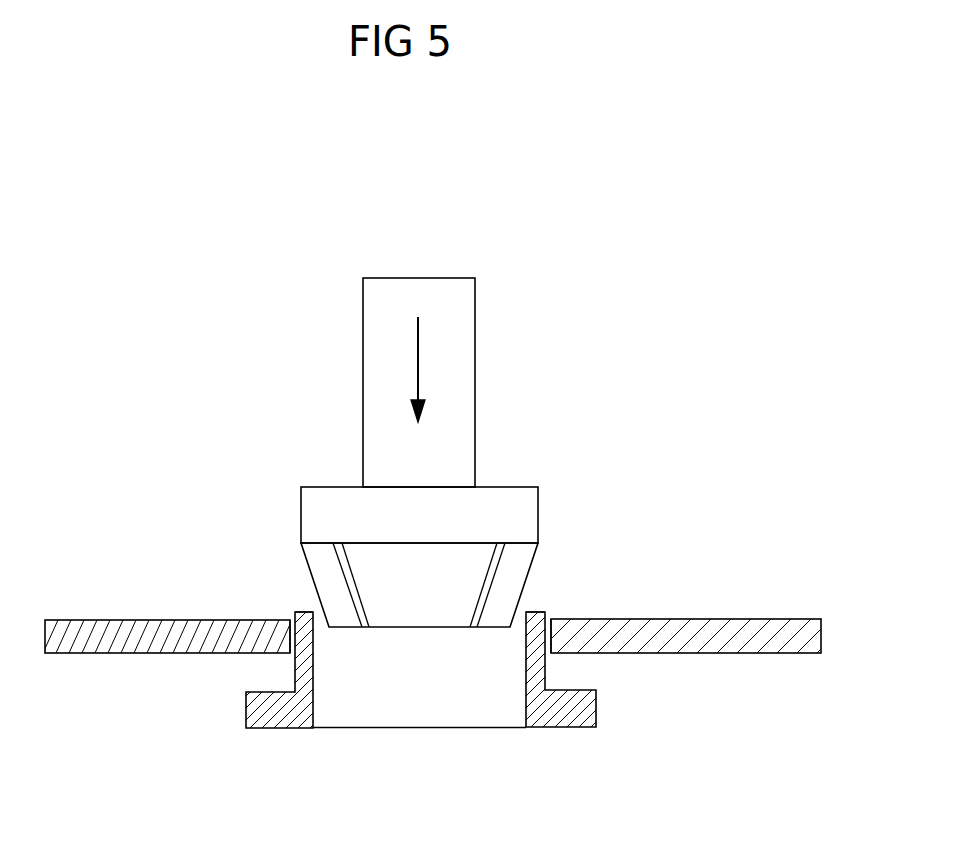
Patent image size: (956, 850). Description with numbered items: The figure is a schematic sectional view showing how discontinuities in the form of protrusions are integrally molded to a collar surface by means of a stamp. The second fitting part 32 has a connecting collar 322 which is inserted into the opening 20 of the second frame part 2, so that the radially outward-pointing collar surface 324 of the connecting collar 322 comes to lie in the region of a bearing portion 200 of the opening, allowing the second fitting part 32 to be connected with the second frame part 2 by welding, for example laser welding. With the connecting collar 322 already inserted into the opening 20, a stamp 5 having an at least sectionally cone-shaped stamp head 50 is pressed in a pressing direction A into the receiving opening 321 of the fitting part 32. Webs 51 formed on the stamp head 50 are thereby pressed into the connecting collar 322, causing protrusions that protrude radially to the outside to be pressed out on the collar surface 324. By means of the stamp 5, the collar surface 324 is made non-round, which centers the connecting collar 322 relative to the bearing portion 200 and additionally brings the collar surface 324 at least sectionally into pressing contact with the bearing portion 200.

The stamp 5 is at (448, 403).
The pressing direction A is at (419, 370).
The stamp head 50 is at (466, 557).
The webs 51 is at (340, 548).
The second frame part 2 is at (684, 653).
The bearing portion 200 is at (548, 615).
The opening 20 is at (294, 618).
The second fitting part 32 is at (418, 712).
The receiving opening 321 is at (558, 712).
The connecting collar 322 is at (313, 705).
The collar surface 324 is at (295, 672).